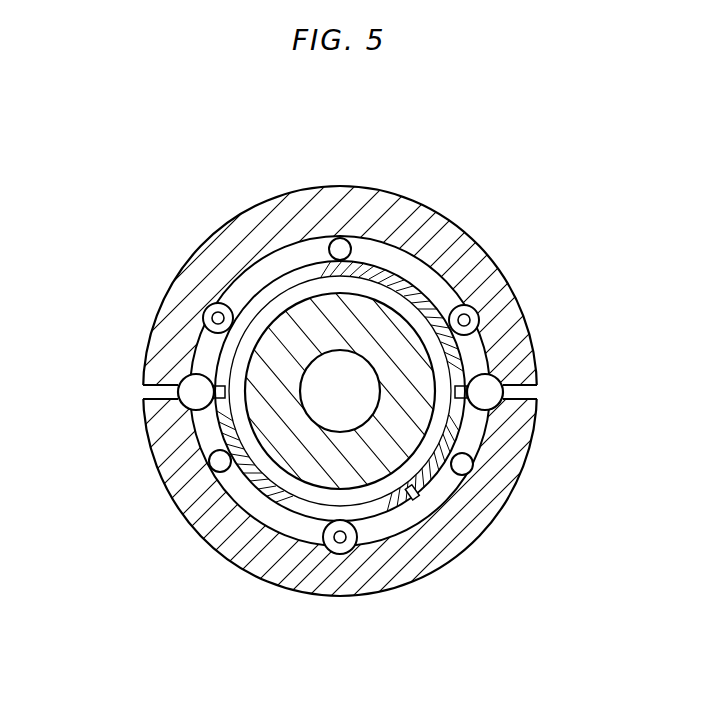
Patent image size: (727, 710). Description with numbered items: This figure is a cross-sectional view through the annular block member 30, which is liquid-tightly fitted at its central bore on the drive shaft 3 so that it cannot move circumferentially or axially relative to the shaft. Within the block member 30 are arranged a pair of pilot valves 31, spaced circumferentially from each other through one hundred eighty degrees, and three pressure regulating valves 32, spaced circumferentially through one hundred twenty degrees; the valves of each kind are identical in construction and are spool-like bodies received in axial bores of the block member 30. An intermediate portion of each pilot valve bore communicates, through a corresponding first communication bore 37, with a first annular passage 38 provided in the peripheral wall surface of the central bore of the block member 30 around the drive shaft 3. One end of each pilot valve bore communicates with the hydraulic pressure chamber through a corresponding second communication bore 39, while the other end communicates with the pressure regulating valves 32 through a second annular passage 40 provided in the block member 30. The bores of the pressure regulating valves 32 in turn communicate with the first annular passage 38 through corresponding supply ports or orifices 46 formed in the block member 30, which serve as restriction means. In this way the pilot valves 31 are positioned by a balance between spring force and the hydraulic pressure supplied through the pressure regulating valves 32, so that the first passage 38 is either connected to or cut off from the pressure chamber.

The drive shaft 3 is at (290, 445).
The annular block member 30 is at (403, 190).
The pilot valves 31 is at (504, 371).
The pressure regulating valves 32 is at (327, 243).
The first communication bores 37 is at (247, 393).
The first annular passage 38 is at (312, 496).
The second communication bores 39 is at (530, 393).
The second annular passage 40 is at (402, 520).
The supply ports or orifices 46 is at (411, 494).